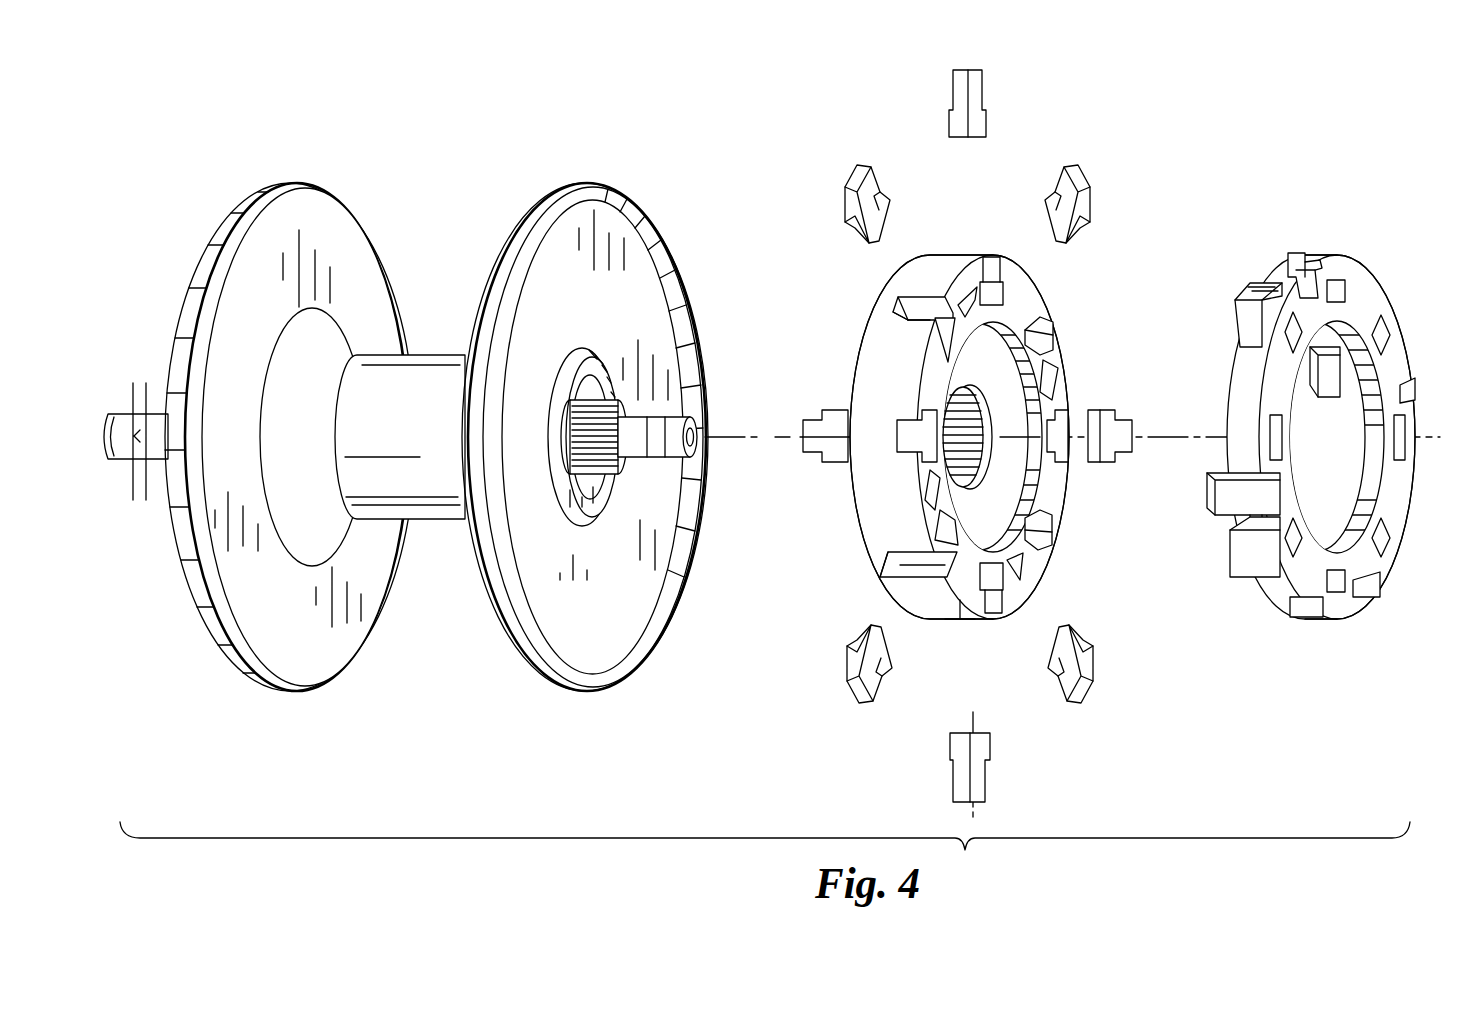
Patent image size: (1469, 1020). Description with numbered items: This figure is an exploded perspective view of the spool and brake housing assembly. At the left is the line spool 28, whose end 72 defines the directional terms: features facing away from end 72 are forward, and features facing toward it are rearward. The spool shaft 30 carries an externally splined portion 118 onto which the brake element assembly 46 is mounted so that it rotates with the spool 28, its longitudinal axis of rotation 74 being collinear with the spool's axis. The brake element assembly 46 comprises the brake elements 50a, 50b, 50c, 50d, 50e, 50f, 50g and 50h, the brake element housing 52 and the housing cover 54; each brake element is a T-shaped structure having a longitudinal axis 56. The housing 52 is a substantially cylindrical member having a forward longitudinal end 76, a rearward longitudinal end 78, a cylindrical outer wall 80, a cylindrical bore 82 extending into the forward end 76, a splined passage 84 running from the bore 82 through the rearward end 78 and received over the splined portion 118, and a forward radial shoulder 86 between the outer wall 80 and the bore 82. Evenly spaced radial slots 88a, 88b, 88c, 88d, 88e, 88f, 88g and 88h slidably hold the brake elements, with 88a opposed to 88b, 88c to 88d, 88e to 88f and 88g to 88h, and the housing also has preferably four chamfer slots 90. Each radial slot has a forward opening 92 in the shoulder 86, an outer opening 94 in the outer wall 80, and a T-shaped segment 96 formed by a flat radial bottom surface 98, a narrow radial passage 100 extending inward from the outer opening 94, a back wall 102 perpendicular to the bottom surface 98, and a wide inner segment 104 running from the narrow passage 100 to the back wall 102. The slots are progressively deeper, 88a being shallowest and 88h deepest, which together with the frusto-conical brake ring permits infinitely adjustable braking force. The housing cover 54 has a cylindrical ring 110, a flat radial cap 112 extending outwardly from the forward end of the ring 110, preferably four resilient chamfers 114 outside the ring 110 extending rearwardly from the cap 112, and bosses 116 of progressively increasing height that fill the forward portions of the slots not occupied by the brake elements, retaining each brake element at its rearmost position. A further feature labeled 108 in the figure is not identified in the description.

The line spool 28 is at (273, 182).
The spool shaft 30 is at (122, 425).
The end of line spool 72 is at (603, 237).
The externally splined portion 118 is at (597, 410).
The longitudinal axis of rotation 74 is at (740, 445).
The brake element assembly 46 is at (1021, 238).
The rearward longitudinal end 78 is at (938, 248).
The cylindrical outer wall 80 is at (944, 258).
The forward longitudinal end 76 is at (1040, 275).
The cylindrical bore 82 is at (1028, 460).
The splined passage 84 is at (966, 420).
The forward radial shoulder 86 is at (1045, 505).
The radial slot 88a is at (991, 256).
The radial slot 88b is at (994, 614).
The radial slot 88c is at (915, 458).
The radial slot 88d is at (1062, 425).
The radial slot 88e is at (948, 590).
The radial slot 88f is at (1048, 332).
The radial slot 88g is at (925, 300).
The radial slot 88h is at (1045, 545).
The chamfer slot 90 is at (975, 298).
The forward opening 92 is at (950, 530).
The outer opening 94 is at (893, 557).
The T-shaped segment 96 is at (925, 570).
The flat radial bottom surface 98 is at (905, 320).
The narrow radial passage 100 is at (915, 305).
The back wall 102 is at (935, 330).
The wide inner segment 104 is at (925, 325).
The ring bottom 108 is at (962, 622).
The brake element housing 52 is at (952, 622).
The longitudinal axis 56 is at (972, 716).
The brake element 50a is at (972, 96).
The brake element 50b is at (980, 766).
The brake element 50c is at (815, 422).
The brake element 50d is at (1112, 420).
The brake element 50e is at (865, 700).
The brake element 50f is at (1085, 172).
The brake element 50g is at (848, 170).
The brake element 50h is at (1080, 700).
The housing cover 54 is at (1378, 570).
The flat radial cap 112 is at (1340, 268).
The cylindrical ring 110 is at (1353, 355).
The resilient chamfer 114 is at (1300, 252).
The bosses 116 is at (1302, 262).